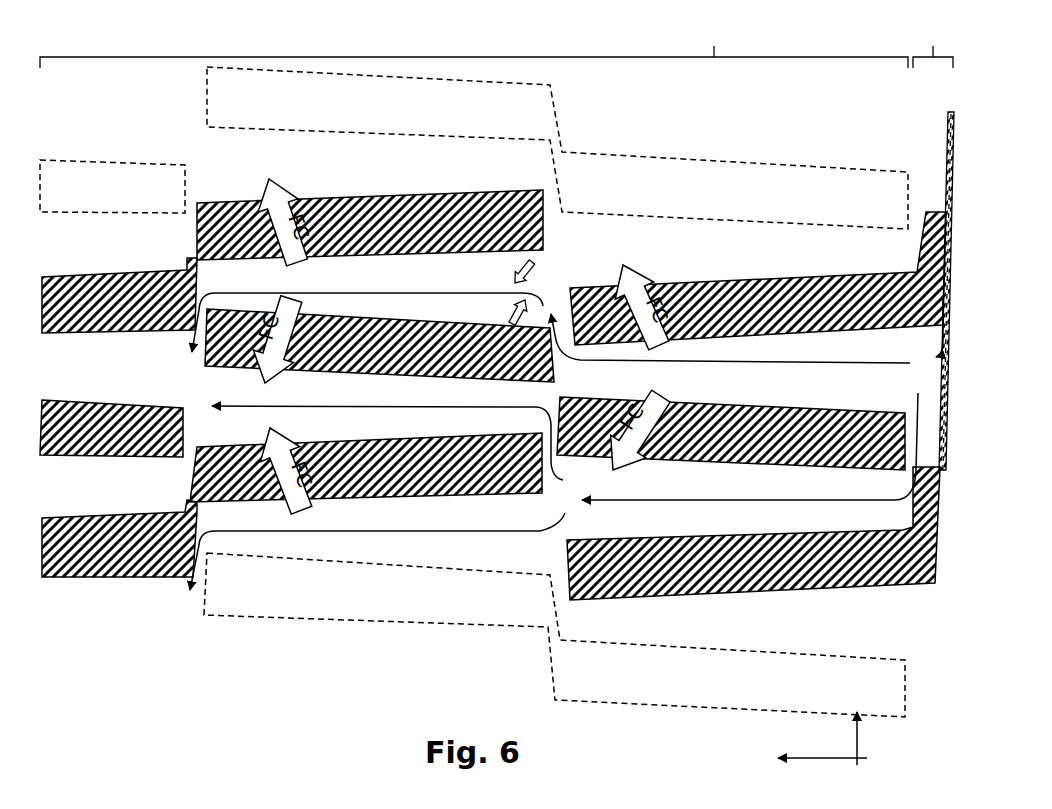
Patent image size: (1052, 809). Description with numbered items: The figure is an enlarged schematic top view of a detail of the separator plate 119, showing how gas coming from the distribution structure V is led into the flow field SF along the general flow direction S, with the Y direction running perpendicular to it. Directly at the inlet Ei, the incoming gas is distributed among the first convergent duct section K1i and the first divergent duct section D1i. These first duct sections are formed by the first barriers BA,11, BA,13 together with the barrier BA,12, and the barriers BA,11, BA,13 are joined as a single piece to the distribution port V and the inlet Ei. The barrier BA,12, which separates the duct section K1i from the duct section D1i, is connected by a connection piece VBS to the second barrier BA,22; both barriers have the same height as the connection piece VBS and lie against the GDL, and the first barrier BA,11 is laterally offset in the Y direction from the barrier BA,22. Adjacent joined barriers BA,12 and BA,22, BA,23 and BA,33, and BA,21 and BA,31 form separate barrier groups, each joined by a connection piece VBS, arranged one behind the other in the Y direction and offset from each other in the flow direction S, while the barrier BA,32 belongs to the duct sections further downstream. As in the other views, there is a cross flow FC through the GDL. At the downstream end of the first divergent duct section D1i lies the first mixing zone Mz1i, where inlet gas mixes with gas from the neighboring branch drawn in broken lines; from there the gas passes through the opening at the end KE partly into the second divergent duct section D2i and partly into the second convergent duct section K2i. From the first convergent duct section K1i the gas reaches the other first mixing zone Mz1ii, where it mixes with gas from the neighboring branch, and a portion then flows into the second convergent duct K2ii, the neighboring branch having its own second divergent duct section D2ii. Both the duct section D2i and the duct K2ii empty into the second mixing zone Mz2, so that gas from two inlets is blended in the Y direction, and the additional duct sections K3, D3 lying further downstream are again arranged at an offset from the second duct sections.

The flow field SF is at (474, 36).
The distribution structure V is at (933, 237).
The separator plate 119 is at (888, 137).
The barrier BA,23 is at (370, 225).
The barrier BA,33 is at (119, 295).
The second barrier BA,22 is at (379, 345).
The barrier BA,32 is at (111, 428).
The barrier BA,21 is at (366, 467).
The barrier BA,31 is at (119, 538).
The first barrier BA,13 is at (758, 278).
The barrier BA,12 is at (731, 433).
The first barrier BA,11 is at (753, 533).
The second convergent duct K2ii is at (412, 290).
The second convergent duct section K2i is at (406, 527).
The second divergent duct section D2i is at (408, 435).
The second divergent duct section D2ii is at (414, 187).
The first convergent duct section K1i is at (750, 395).
The first divergent duct section D1i is at (752, 495).
The inlet Ei is at (945, 393).
The upstream end KE is at (550, 187).
The other first mixing zone Mz1ii is at (602, 280).
The first mixing zone Mz1i is at (615, 495).
The second mixing zone Mz2 is at (187, 390).
The additional convergent duct section K3 is at (120, 390).
The additional divergent duct section D3 is at (120, 497).
The connection piece VBS is at (191, 262).
The cross flow FC is at (461, 344).
The Y direction Y is at (870, 732).
The flow direction S is at (822, 743).